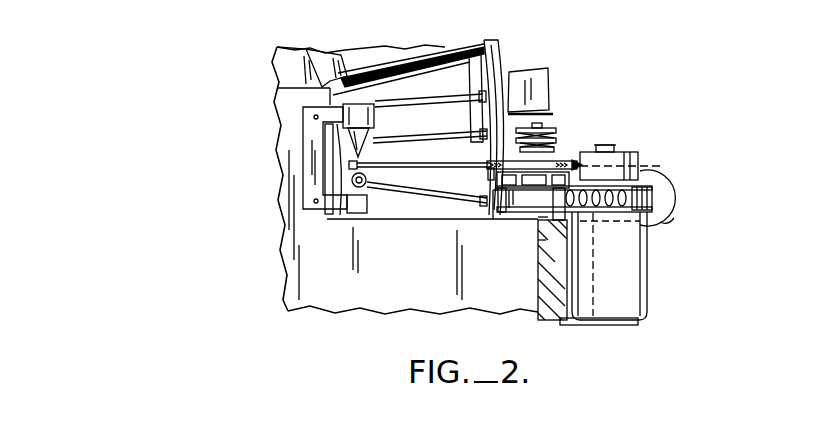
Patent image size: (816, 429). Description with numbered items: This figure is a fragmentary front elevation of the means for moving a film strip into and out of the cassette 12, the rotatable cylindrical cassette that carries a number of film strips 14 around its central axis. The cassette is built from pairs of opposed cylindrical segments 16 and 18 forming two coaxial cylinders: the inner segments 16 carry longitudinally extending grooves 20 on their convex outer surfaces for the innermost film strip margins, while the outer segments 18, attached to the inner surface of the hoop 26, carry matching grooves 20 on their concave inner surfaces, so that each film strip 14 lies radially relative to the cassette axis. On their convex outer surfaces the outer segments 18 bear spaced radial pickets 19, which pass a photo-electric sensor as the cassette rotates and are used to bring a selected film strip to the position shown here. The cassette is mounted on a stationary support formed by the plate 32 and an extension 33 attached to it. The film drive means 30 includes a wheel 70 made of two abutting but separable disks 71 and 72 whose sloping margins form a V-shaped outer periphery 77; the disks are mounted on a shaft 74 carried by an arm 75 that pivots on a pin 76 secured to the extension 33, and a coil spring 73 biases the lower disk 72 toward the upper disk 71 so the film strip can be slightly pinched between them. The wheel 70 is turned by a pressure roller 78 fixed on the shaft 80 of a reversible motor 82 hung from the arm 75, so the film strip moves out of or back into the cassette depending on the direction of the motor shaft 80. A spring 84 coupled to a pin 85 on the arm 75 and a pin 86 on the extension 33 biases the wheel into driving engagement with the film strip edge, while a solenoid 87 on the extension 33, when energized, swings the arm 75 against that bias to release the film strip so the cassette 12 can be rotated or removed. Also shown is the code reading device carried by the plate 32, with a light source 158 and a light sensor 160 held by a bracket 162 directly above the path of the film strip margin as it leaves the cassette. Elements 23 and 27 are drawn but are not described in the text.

The cassette 12 is at (353, 44).
The film strips 14 is at (394, 165).
The inner segments 16 is at (331, 58).
The outer segments 18 is at (472, 74).
The pickets 19 is at (552, 74).
The grooves 20 is at (476, 129).
The wedge block 23 is at (302, 57).
The hoop 26 is at (498, 56).
The arm 27 is at (446, 48).
The film drive means 30 is at (628, 60).
The plate 32 is at (428, 273).
The extension 33 is at (552, 311).
The wheel 70 is at (563, 114).
The disk 71 is at (569, 160).
The disk 72 is at (490, 176).
The coil spring 73 is at (566, 134).
The shaft 74 is at (540, 124).
The arm 75 is at (653, 186).
The pin 76 is at (543, 218).
The V-shaped outer periphery 77 is at (486, 162).
The pressure roller 78 is at (636, 158).
The shaft 80 is at (604, 145).
The reversible motor 82 is at (650, 274).
The spring 84 is at (606, 205).
The pin 85 is at (652, 172).
The pin 86 is at (542, 240).
The solenoid 87 is at (666, 224).
The light source 158 is at (368, 204).
The light sensor 160 is at (372, 104).
The bracket 162 is at (310, 135).